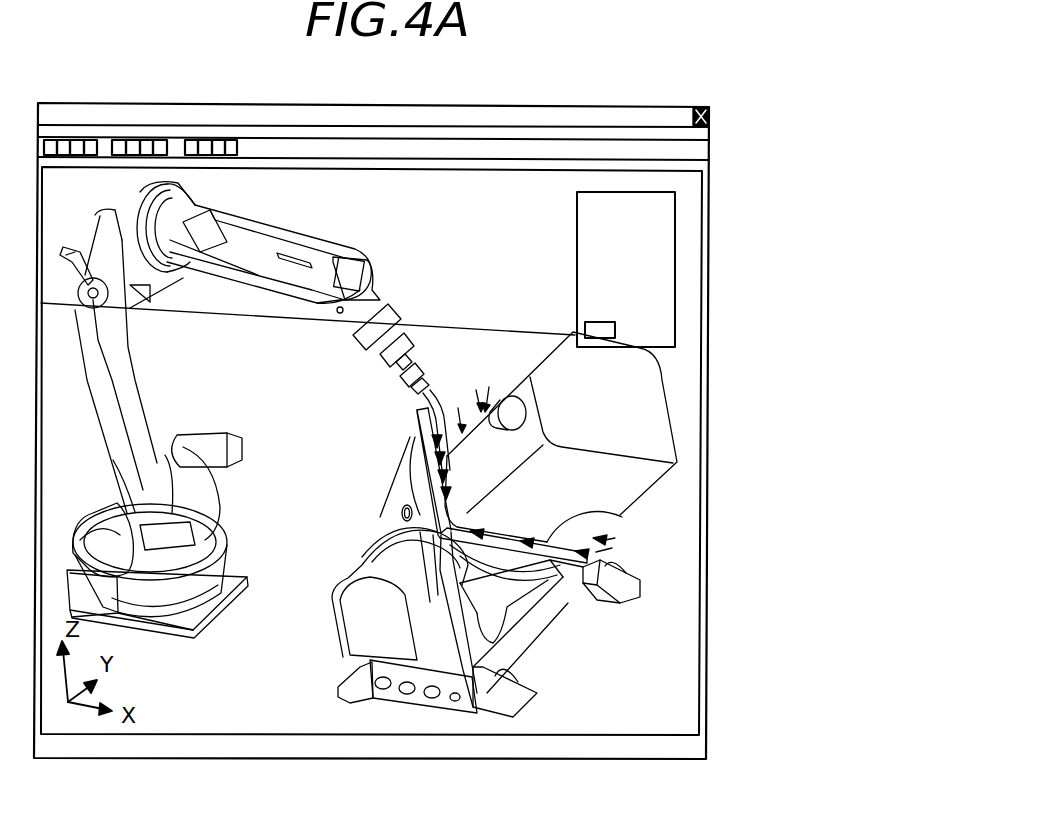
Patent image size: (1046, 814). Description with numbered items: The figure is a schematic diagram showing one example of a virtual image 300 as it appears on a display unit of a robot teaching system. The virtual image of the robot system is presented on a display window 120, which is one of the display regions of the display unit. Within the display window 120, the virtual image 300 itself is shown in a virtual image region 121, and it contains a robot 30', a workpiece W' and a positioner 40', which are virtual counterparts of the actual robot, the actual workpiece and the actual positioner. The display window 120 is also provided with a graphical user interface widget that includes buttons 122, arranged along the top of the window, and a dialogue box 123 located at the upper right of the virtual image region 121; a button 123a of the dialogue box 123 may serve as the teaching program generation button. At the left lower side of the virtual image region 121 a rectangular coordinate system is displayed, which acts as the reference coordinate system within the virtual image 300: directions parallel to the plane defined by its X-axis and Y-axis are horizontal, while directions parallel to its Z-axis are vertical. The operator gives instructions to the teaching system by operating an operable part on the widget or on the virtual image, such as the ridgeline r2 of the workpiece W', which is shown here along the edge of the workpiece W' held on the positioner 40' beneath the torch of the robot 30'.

The display window 120 is at (625, 96).
The virtual image region 121 is at (690, 193).
The buttons 122 is at (247, 138).
The dialogue box 123 is at (675, 224).
The button 123a is at (615, 331).
The virtual image 300 is at (690, 669).
The robot 30' is at (215, 408).
The positioner 40' is at (431, 363).
The workpiece W' is at (603, 437).
The ridgeline r2 is at (622, 517).